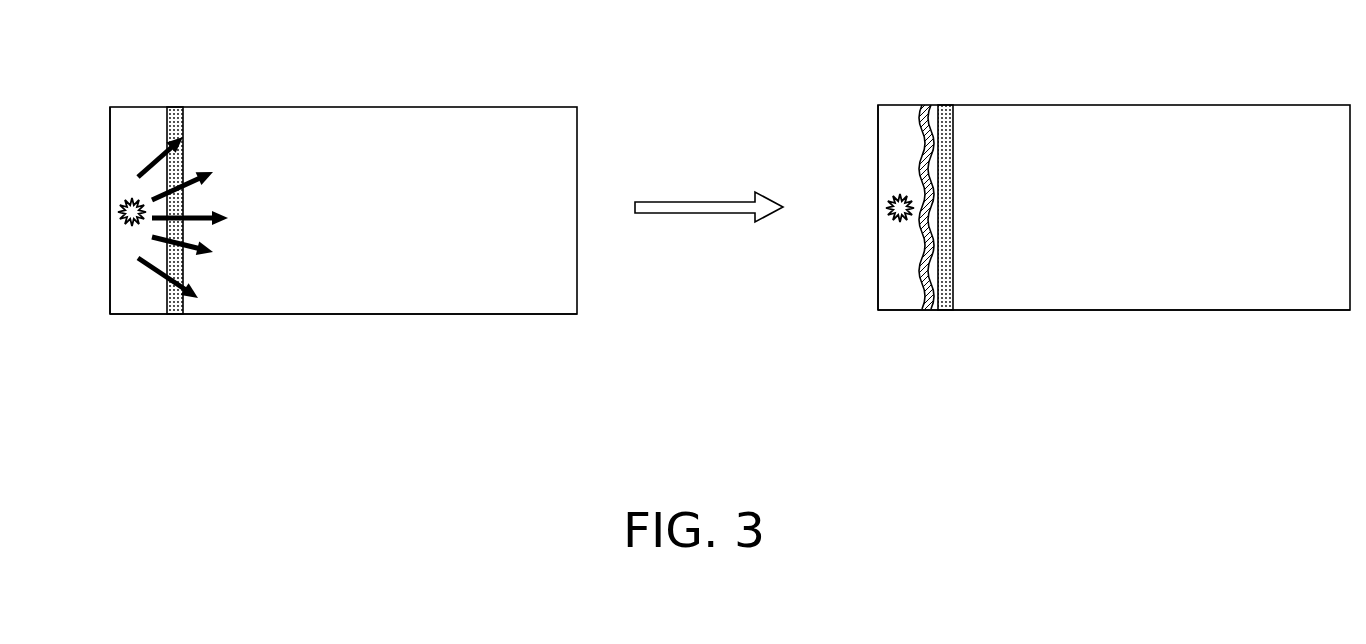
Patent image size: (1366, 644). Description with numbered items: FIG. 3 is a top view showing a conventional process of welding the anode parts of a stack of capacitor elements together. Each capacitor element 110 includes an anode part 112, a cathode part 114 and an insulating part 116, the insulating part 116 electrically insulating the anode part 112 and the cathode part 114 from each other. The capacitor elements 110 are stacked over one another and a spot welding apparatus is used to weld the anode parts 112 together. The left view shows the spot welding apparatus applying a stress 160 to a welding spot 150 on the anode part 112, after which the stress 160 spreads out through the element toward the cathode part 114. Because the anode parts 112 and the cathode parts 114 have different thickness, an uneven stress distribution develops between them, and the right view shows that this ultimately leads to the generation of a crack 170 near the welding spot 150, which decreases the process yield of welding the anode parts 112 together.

The capacitor element 110 is at (556, 419).
The anode part 112 is at (124, 316).
The cathode part 114 is at (294, 316).
The insulating part 116 is at (173, 107).
The welding spot 150 is at (118, 212).
The stress 160 is at (202, 168).
The crack 170 is at (928, 105).